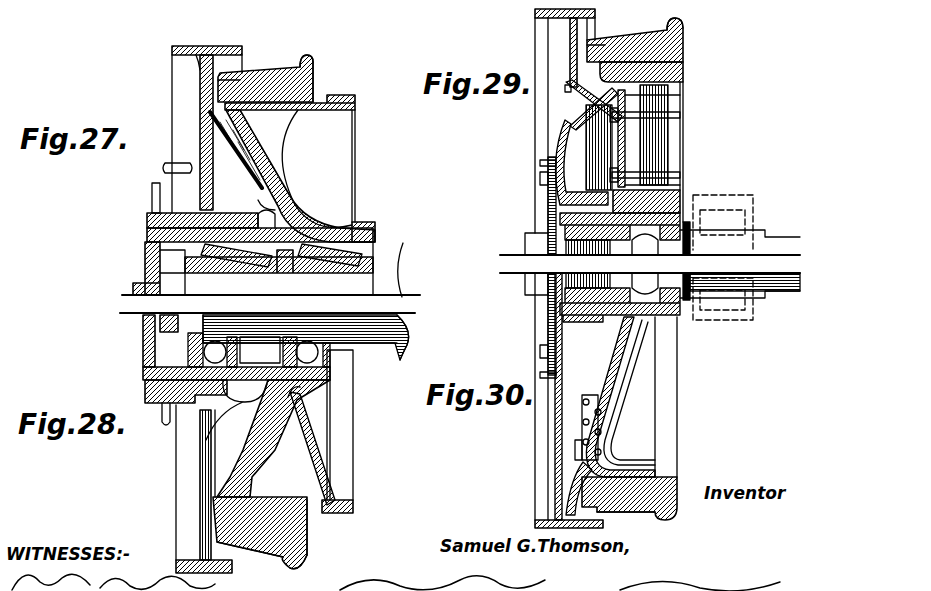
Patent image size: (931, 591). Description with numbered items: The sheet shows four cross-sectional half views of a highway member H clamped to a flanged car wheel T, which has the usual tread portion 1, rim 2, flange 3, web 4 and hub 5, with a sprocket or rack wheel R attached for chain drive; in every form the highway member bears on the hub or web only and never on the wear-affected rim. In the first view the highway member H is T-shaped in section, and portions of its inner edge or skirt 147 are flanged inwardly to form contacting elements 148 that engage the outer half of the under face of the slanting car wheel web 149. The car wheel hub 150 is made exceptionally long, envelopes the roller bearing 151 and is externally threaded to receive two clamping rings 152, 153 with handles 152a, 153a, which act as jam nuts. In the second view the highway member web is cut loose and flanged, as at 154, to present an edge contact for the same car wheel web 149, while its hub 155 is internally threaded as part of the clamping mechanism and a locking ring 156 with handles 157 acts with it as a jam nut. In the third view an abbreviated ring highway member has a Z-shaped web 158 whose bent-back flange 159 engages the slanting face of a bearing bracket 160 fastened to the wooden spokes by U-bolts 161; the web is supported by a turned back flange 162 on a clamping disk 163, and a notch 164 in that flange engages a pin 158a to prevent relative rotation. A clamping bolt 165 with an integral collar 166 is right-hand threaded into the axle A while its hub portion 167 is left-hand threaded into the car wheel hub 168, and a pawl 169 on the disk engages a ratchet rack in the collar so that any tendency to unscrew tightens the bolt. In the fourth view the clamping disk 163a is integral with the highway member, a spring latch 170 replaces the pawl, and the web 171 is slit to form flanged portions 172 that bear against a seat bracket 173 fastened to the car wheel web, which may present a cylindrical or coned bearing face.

In FIG. 27, the highway member H is at (171, 50).
In FIG. 28, the highway member H is at (174, 492).
In FIG. 29, the highway member H is at (533, 14).
In FIG. 30, the highway member H is at (533, 512).
In FIG. 27, the flanged car wheel T is at (318, 88).
In FIG. 28, the flanged car wheel T is at (310, 537).
In FIG. 29, the flanged car wheel T is at (685, 57).
In FIG. 30, the flanged car wheel T is at (680, 457).
In FIG. 27, the sprocket or rack wheel R is at (356, 100).
In FIG. 28, the sprocket or rack wheel R is at (354, 469).
In FIG. 30, the axle A is at (686, 319).
In FIG. 27, the tread portion 1 is at (284, 64).
In FIG. 28, the tread portion 1 is at (272, 561).
In FIG. 29, the tread portion 1 is at (648, 28).
In FIG. 30, the tread portion 1 is at (667, 518).
In FIG. 27, the rim 2 is at (243, 80).
In FIG. 28, the rim 2 is at (273, 538).
In FIG. 29, the rim 2 is at (605, 45).
In FIG. 30, the rim 2 is at (620, 501).
In FIG. 27, the flange 3 is at (309, 60).
In FIG. 28, the flange 3 is at (300, 560).
In FIG. 29, the flange 3 is at (687, 25).
In FIG. 27, the web 4 is at (248, 144).
In FIG. 28, the web 4 is at (252, 480).
In FIG. 30, the web 4 is at (614, 381).
In FIG. 27, the hub 5 is at (148, 238).
In FIG. 28, the hub 5 is at (292, 388).
In FIG. 30, the hub 5 is at (637, 327).
In FIG. 27, the inner edge or skirt 147 is at (208, 100).
In FIG. 27, the contacting elements 148 is at (262, 172).
In FIG. 27, the car wheel web 149 is at (278, 145).
In FIG. 28, the car wheel web 149 is at (308, 430).
In FIG. 27, the car wheel hub 150 is at (280, 218).
In FIG. 27, the roller bearing 151 is at (298, 230).
In FIG. 27, the clamping ring 152 is at (148, 219).
In FIG. 27, the handle 152a is at (152, 197).
In FIG. 27, the clamping ring 153 is at (262, 203).
In FIG. 27, the handle 153a is at (162, 169).
In FIG. 28, the flanged portions 154 is at (213, 452).
In FIG. 28, the hub of highway member 155 is at (205, 418).
In FIG. 28, the locking ring 156 is at (150, 384).
In FIG. 28, the handles 157 is at (160, 412).
In FIG. 29, the web of highway member 158 is at (570, 48).
In FIG. 29, the pin 158a is at (565, 90).
In FIG. 29, the flange 159 is at (655, 88).
In FIG. 29, the bearing bracket 160 is at (627, 135).
In FIG. 29, the U-bolts 161 is at (681, 116).
In FIG. 29, the turned back flange 162 is at (592, 104).
In FIG. 29, the clamping disk 163 is at (560, 135).
In FIG. 30, the clamping disk 163a is at (584, 441).
In FIG. 29, the notch 164 is at (577, 95).
In FIG. 29, the clamping bolt 165 is at (537, 241).
In FIG. 30, the clamping bolt 165 is at (537, 281).
In FIG. 30, the collar 166 is at (549, 317).
In FIG. 29, the hub portion 167 is at (551, 211).
In FIG. 29, the car wheel hub 168 is at (682, 199).
In FIG. 29, the pawl 169 is at (548, 164).
In FIG. 30, the spring latch 170 is at (546, 353).
In FIG. 30, the web of highway member 171 is at (557, 421).
In FIG. 30, the flanged portions 172 is at (566, 479).
In FIG. 30, the seat bracket 173 is at (575, 453).